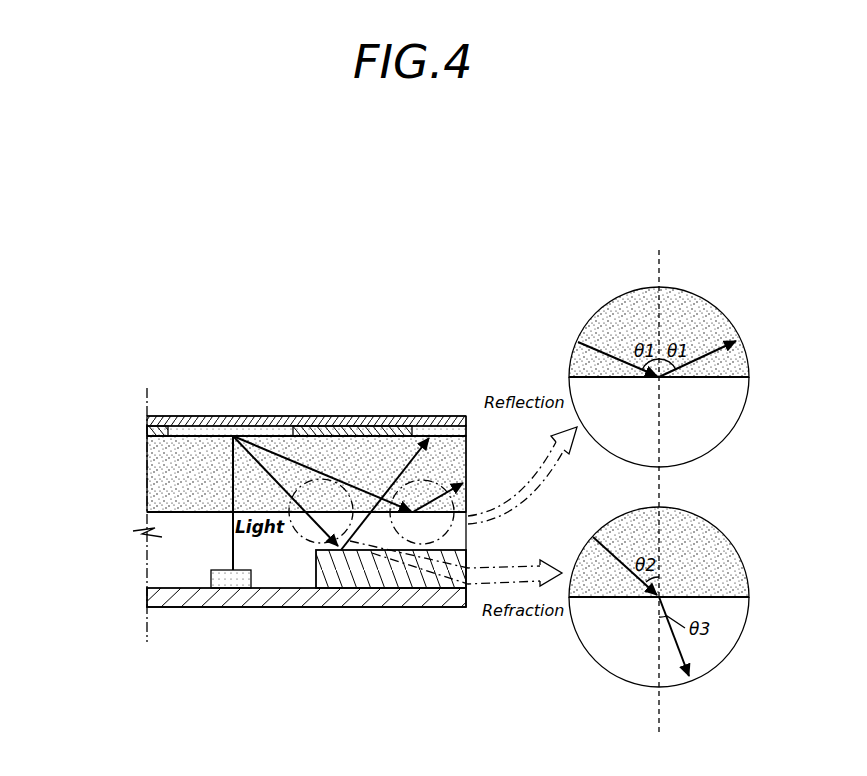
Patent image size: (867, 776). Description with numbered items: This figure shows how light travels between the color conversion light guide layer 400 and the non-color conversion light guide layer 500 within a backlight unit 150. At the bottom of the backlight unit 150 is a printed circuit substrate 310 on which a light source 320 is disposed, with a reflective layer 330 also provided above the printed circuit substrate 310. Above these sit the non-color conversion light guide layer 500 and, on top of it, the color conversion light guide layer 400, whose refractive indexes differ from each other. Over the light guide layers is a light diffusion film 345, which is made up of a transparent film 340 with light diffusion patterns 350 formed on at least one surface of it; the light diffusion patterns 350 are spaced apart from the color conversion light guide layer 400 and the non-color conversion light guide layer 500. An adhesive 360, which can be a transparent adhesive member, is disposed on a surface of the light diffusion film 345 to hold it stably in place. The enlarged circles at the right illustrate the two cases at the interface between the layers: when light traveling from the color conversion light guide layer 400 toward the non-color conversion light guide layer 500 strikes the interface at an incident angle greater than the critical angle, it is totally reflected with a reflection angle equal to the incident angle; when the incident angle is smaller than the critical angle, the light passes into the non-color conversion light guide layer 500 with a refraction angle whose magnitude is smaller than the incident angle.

The backlight unit 150 is at (189, 353).
The light diffusion film 345 is at (86, 465).
The transparent film 340 is at (148, 421).
The adhesive 360 is at (148, 431).
The light diffusion pattern 350 is at (148, 437).
The color conversion light guide layer 400 is at (148, 489).
The non-color conversion light guide layer 500 is at (148, 560).
The printed circuit substrate 310 is at (148, 598).
The light source 320 is at (231, 582).
The reflective layer 330 is at (341, 572).